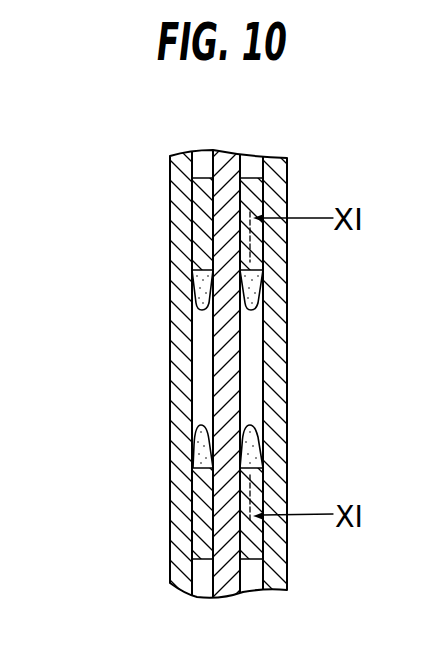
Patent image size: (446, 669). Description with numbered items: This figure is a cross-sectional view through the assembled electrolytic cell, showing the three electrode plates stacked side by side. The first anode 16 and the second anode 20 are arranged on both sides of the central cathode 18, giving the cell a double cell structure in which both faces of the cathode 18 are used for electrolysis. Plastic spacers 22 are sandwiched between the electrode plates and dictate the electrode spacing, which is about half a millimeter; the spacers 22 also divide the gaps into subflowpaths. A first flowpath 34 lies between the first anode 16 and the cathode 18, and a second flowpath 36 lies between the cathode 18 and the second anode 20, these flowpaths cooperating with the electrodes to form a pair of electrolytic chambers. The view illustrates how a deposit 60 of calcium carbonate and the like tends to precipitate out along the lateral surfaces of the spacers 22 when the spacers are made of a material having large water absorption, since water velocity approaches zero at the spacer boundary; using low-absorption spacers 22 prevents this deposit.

The first anode 16 is at (176, 190).
The cathode 18 is at (226, 182).
The second anode 20 is at (287, 174).
The plastic spacers 22 is at (243, 250).
The first flowpath 34 is at (202, 380).
The second flowpath 36 is at (253, 386).
The deposit 60 is at (200, 303).